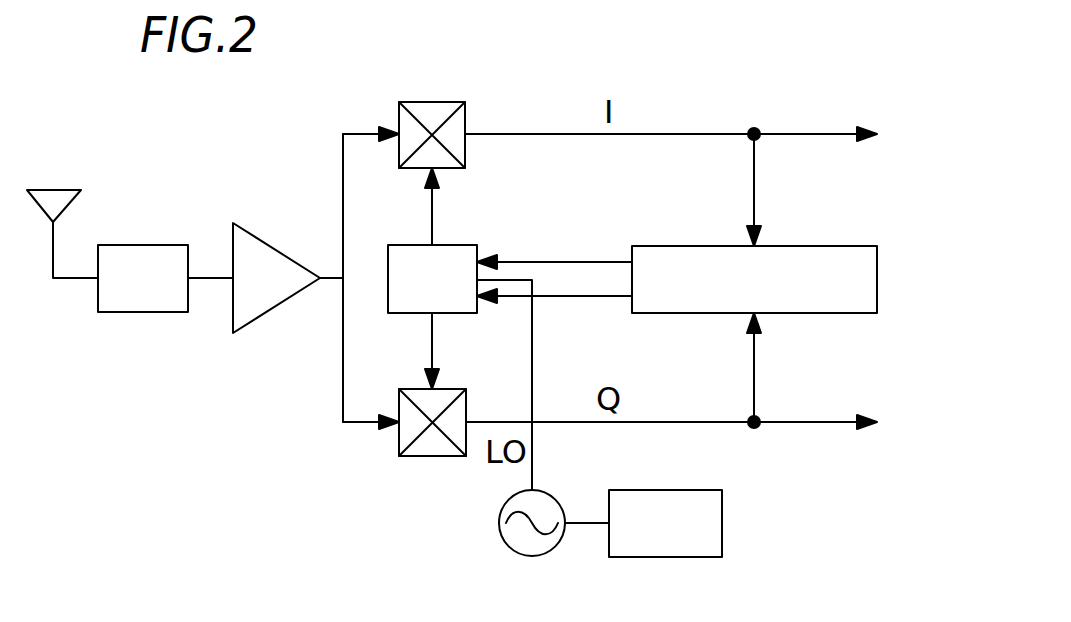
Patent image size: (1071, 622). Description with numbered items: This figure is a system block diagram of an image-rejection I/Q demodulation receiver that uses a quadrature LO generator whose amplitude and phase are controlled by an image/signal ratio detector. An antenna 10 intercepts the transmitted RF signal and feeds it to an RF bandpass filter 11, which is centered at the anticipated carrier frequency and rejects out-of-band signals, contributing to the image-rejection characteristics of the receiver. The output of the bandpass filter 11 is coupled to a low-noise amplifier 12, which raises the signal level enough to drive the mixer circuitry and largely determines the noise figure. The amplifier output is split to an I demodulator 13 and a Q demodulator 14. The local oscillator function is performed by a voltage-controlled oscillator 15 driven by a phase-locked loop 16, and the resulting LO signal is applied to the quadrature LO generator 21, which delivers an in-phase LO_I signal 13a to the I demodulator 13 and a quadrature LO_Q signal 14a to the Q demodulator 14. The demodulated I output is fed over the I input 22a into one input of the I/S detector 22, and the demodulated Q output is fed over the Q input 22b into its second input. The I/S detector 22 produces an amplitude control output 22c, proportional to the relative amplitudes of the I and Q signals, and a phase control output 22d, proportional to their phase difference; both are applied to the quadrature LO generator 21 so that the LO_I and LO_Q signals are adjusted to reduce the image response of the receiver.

The antenna 10 is at (53, 190).
The RF bandpass filter 11 is at (143, 312).
The low-noise amplifier 12 is at (276, 307).
The I demodulator 13 is at (430, 102).
The LO_I signal 13a is at (434, 201).
The Q demodulator 14 is at (432, 456).
The LO_Q signal 14a is at (432, 338).
The voltage-controlled oscillator 15 is at (552, 493).
The phase-locked loop 16 is at (667, 490).
The quadrature LO generator 21 is at (480, 245).
The image/signal ratio (I/S) detector 22 is at (793, 246).
The I signal input to detector 22a is at (754, 185).
The Q signal input to detector 22b is at (754, 373).
The amplitude control output 22c is at (575, 262).
The phase control output 22d is at (565, 296).